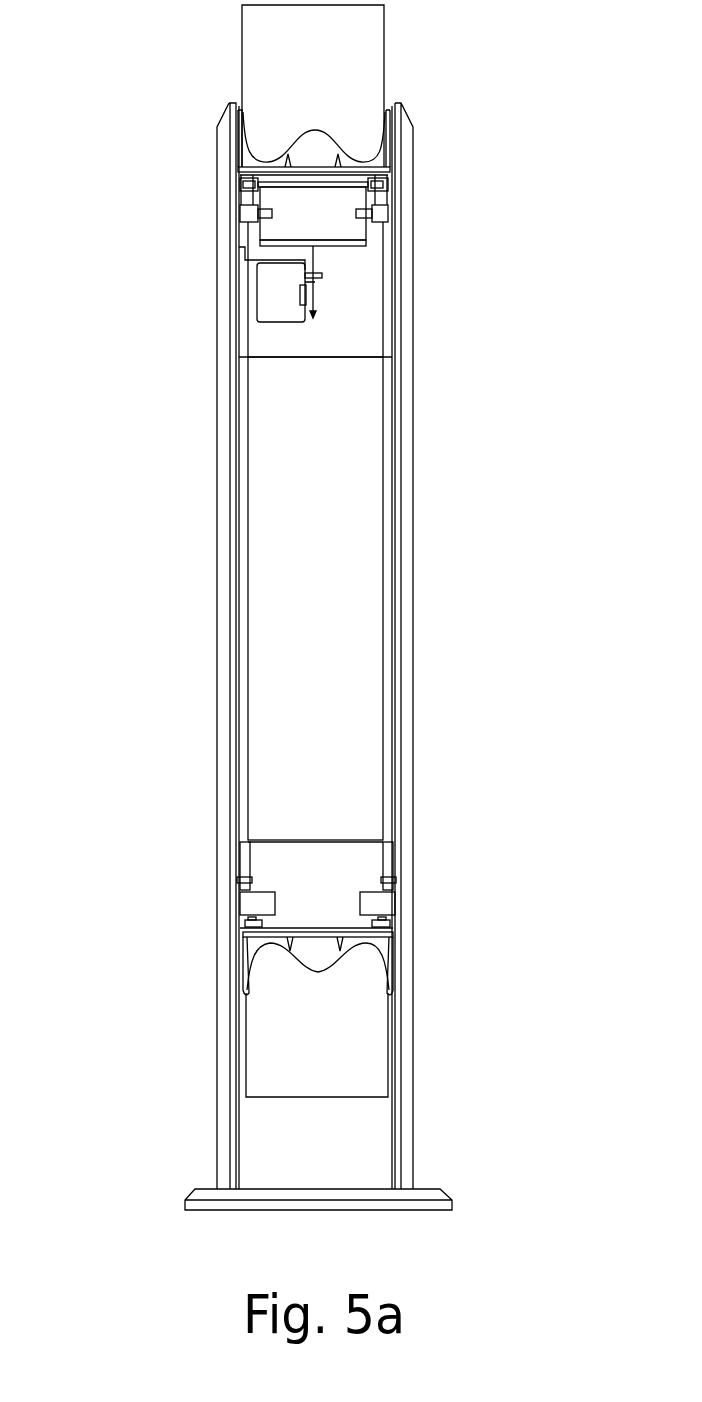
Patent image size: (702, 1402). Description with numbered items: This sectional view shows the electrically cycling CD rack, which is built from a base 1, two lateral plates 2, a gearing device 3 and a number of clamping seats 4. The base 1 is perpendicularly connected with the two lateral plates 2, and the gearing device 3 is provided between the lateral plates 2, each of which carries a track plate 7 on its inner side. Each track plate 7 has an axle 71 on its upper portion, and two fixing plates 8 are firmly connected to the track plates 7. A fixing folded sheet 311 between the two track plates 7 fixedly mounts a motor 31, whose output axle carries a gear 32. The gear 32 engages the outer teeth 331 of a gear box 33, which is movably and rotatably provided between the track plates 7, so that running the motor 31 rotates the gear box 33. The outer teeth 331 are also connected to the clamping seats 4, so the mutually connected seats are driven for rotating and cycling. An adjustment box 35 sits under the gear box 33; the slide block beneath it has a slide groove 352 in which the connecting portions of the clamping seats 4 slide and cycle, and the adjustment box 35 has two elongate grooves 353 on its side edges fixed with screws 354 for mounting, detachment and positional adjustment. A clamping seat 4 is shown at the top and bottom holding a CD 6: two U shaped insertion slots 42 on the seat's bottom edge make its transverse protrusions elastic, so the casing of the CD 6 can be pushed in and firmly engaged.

The base 1 is at (357, 1188).
The lateral plate 2 is at (225, 503).
The gearing device 3 is at (343, 320).
The clamping seat 4 is at (278, 1004).
The CD 6 is at (272, 70).
The track plate 7 is at (237, 370).
The fixing plate 8 is at (333, 586).
The motor 31 is at (266, 305).
The gear 32 is at (318, 264).
The gear box 33 is at (356, 197).
The adjustment box 35 is at (232, 897).
The U shaped insertion slot 42 is at (340, 160).
The axle 71 is at (241, 213).
The fixing folded sheet 311 is at (245, 258).
The outer teeth 331 is at (366, 240).
The slide groove 352 is at (370, 917).
The elongate groove 353 is at (393, 858).
The screw 354 is at (240, 880).